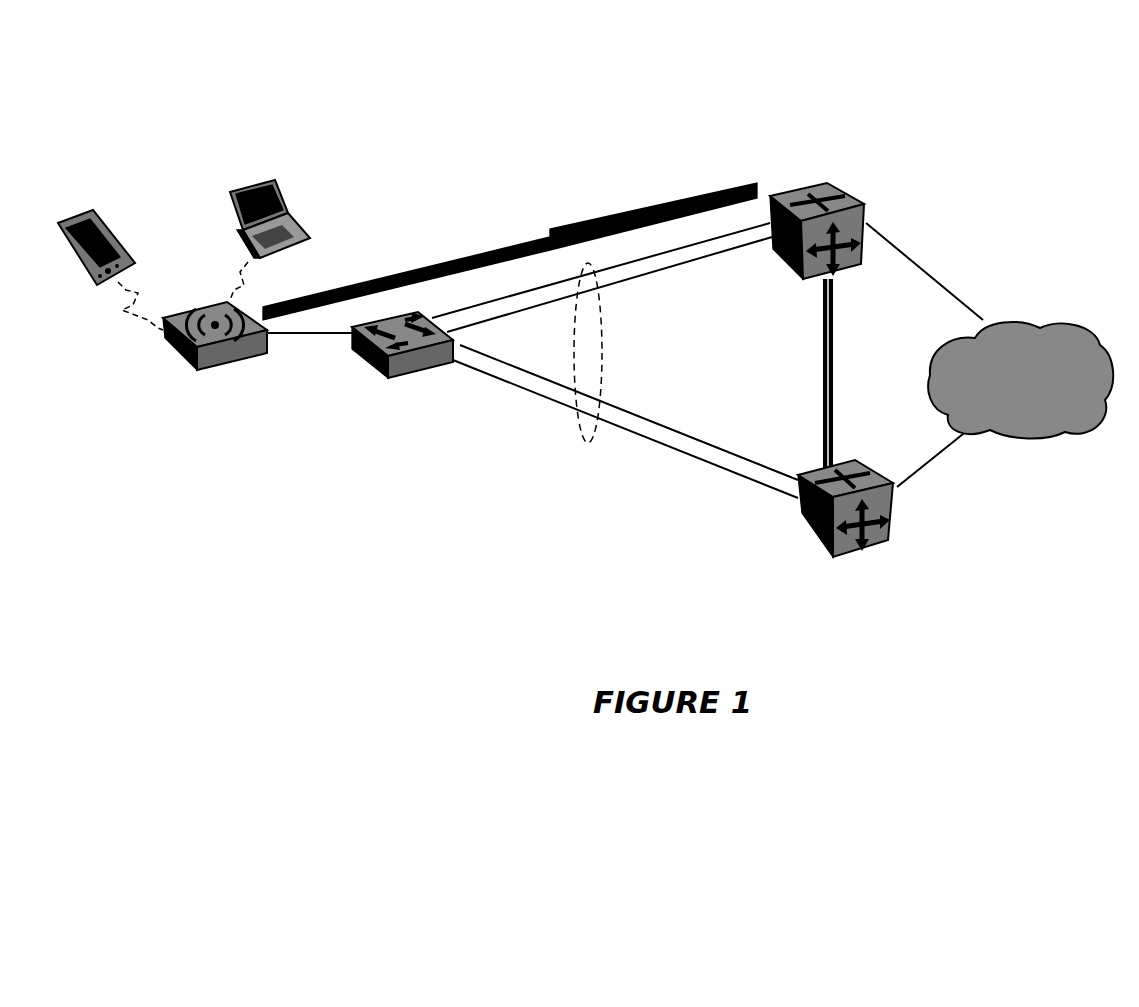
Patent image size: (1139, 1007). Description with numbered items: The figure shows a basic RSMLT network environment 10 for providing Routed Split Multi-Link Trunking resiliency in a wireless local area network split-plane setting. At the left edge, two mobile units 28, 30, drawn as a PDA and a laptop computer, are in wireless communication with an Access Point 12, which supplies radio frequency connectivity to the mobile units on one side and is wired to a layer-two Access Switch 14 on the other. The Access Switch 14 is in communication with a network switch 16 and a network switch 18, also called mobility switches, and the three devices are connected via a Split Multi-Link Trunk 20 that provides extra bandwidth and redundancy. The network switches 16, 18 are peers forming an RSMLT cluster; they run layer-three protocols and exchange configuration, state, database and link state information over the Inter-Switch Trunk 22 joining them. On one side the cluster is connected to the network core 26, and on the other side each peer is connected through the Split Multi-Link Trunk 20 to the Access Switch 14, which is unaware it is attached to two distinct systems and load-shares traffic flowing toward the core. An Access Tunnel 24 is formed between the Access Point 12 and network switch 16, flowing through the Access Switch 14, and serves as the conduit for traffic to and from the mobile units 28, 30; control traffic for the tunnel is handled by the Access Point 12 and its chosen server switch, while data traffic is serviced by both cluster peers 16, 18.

The RSMLT network environment 10 is at (159, 50).
The Access Point 12 is at (220, 343).
The Access Switch 14 is at (391, 373).
The network switch 16 is at (866, 207).
The network switch 18 is at (887, 530).
The Split Multi-Link Trunk 20 is at (615, 360).
The Inter-Switch Trunk 22 is at (875, 374).
The Access Tunnel 24 is at (510, 246).
The network core 26 is at (989, 355).
The mobile unit 28 is at (134, 217).
The mobile unit 30 is at (314, 196).